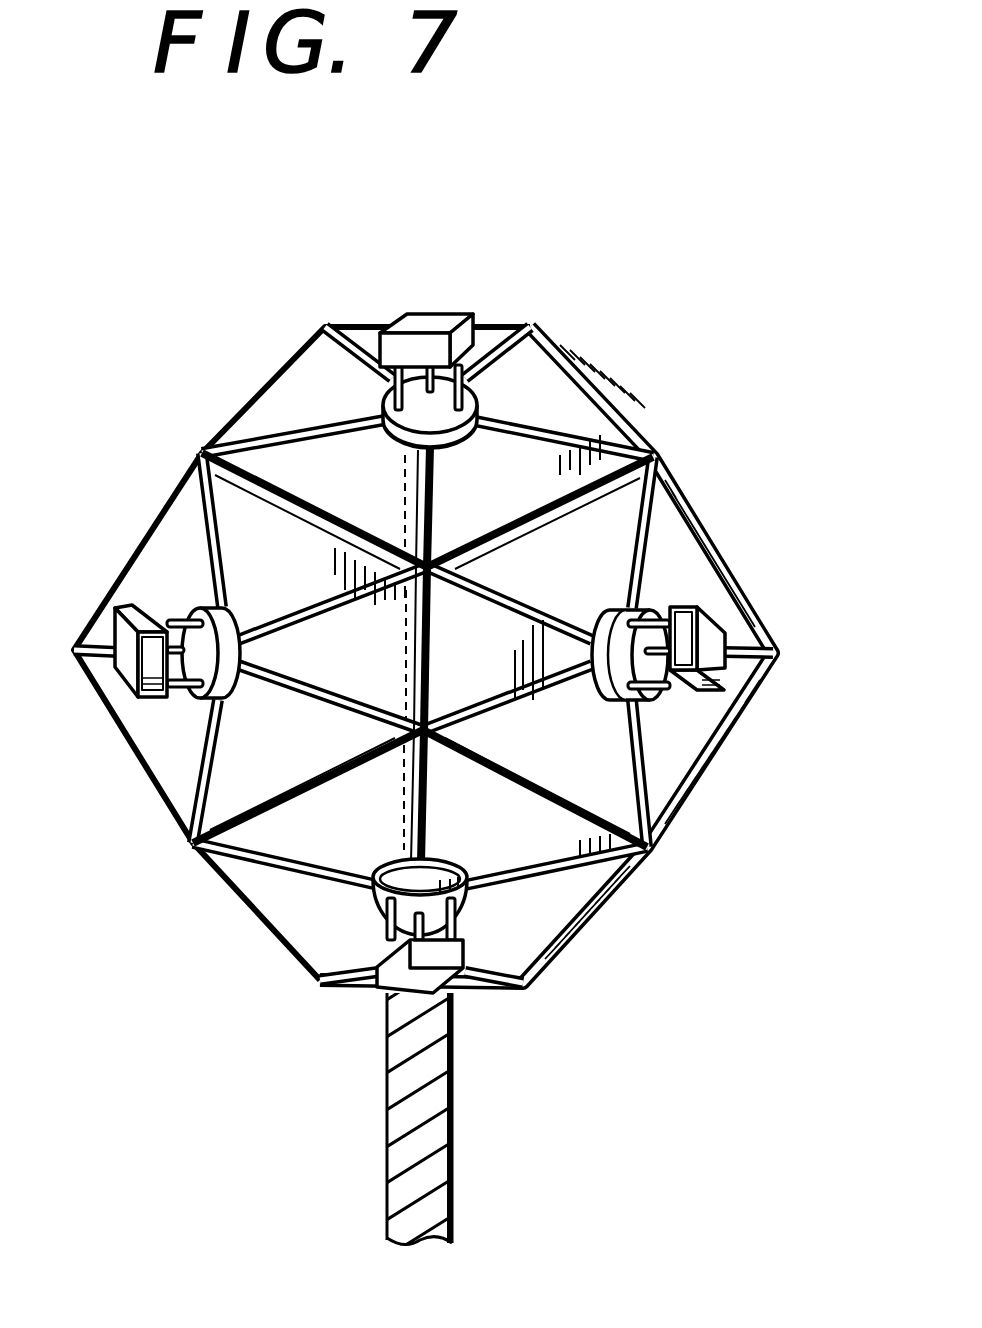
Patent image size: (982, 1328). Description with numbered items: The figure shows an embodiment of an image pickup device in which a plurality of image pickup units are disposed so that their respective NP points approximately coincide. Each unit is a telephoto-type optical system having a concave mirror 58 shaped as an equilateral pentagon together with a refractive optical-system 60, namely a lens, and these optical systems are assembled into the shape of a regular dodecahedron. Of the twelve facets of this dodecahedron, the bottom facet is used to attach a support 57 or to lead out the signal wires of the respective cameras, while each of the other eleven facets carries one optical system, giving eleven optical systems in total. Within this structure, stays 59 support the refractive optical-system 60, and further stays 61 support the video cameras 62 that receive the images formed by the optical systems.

The support 57 is at (388, 1138).
The concave mirror 58 is at (500, 480).
The stays 59 is at (280, 437).
The refractive optical-system 60 is at (383, 445).
The stays 61 is at (165, 600).
The video cameras 62 is at (432, 322).